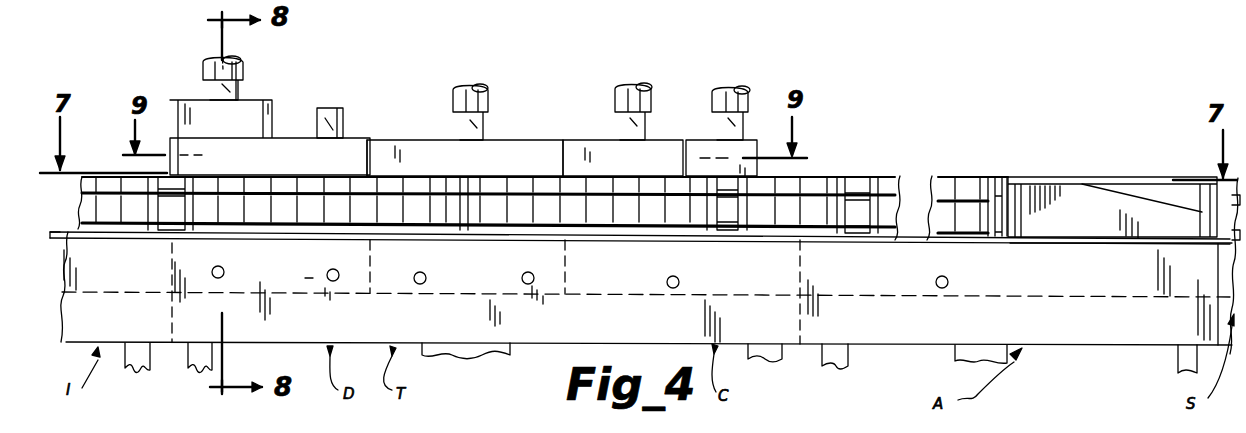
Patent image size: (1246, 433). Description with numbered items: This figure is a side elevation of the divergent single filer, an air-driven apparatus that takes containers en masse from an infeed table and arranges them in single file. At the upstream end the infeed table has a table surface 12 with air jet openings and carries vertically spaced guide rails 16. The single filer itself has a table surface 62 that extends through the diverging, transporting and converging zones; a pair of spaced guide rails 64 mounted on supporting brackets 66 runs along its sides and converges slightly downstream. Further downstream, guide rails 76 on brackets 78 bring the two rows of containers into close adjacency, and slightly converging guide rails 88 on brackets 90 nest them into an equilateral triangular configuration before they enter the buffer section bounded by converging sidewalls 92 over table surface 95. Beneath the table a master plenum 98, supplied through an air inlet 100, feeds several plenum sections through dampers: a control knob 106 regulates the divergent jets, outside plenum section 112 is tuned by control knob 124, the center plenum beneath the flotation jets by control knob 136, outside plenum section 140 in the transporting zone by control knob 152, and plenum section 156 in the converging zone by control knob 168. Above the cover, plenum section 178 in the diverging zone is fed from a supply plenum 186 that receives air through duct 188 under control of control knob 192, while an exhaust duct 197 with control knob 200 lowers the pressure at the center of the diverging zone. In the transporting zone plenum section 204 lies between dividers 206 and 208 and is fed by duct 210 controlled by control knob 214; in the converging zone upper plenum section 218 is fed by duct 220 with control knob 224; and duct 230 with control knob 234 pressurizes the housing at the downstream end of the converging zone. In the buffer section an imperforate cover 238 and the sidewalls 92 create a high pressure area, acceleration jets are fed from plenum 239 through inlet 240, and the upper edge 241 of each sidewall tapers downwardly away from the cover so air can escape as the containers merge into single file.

The table surface 12 is at (75, 242).
The guide rails 16 is at (109, 226).
The table surface 62 is at (438, 238).
The guide rails 64 is at (280, 186).
The supporting brackets 66 is at (190, 210).
The guide rails 76 is at (814, 194).
The brackets 78 is at (824, 256).
The guide rails 88 is at (862, 226).
The brackets 90 is at (864, 226).
The converging sidewalls 92 is at (1102, 228).
The table surface 95 is at (1080, 245).
The master plenum 98 is at (429, 316).
The air inlet 100 is at (466, 362).
The control knob 106 is at (216, 278).
The outside plenum section 112 is at (290, 256).
The control knob 124 is at (330, 280).
The control knob 136 is at (418, 272).
The outside plenum section 140 is at (465, 278).
The control knob 152 is at (522, 278).
The plenum section 156 is at (603, 266).
The control knob 168 is at (670, 284).
The plenum section 178 is at (270, 137).
The supply plenum 186 is at (208, 116).
The duct 188 is at (203, 84).
The control knob 192 is at (238, 92).
The exhaust duct 197 is at (344, 108).
The control knob 200 is at (318, 114).
The plenum section 204 is at (465, 158).
The divider 206 is at (366, 152).
The divider 208 is at (562, 144).
The duct 210 is at (478, 88).
The control knob 214 is at (464, 130).
The upper plenum section 218 is at (660, 158).
The duct 220 is at (618, 86).
The control knob 224 is at (620, 126).
The duct 230 is at (744, 116).
The control knob 234 is at (708, 130).
The imperforate cover 238 is at (1076, 178).
The plenum 239 is at (1116, 346).
The inlet 240 is at (1030, 346).
The upper edge 241 is at (1176, 180).